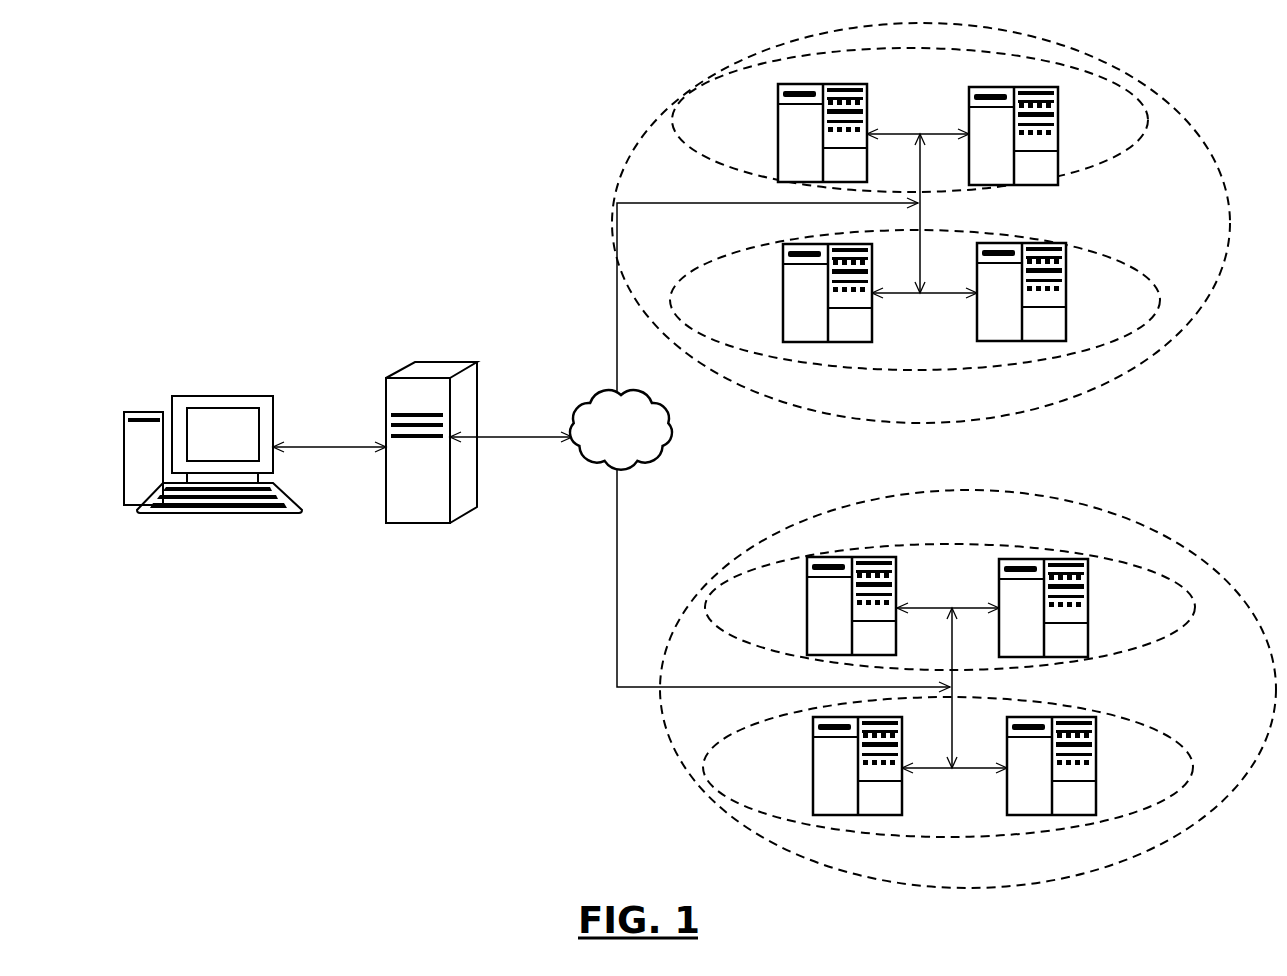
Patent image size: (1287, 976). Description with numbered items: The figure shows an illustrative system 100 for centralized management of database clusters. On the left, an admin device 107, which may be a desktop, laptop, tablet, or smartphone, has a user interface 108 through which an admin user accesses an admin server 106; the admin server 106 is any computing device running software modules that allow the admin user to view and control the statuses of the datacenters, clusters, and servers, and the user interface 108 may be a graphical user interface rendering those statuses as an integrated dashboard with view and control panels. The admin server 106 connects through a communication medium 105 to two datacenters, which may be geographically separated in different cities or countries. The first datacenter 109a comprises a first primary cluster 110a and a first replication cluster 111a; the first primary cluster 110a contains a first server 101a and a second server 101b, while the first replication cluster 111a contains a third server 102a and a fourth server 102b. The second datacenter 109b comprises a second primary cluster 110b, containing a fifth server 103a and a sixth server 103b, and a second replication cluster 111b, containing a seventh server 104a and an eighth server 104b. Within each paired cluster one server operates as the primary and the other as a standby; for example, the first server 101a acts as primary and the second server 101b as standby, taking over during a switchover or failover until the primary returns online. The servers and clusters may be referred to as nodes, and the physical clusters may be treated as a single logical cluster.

The system 100 is at (590, 873).
The first server 101a is at (785, 143).
The second server 101b is at (1042, 167).
The third server 102a is at (793, 322).
The fourth server 102b is at (1048, 330).
The fifth server 103a is at (817, 628).
The sixth server 103b is at (1080, 642).
The seventh server 104a is at (837, 812).
The eighth server 104b is at (1082, 802).
The communication medium 105 is at (621, 430).
The admin server 106 is at (466, 392).
The admin device 107 is at (235, 442).
The user interface 108 is at (223, 434).
The first datacenter 109a is at (623, 174).
The second datacenter 109b is at (680, 760).
The first primary cluster 110a is at (1082, 175).
The second primary cluster 110b is at (997, 547).
The first replication cluster 111a is at (908, 370).
The second replication cluster 111b is at (1107, 713).